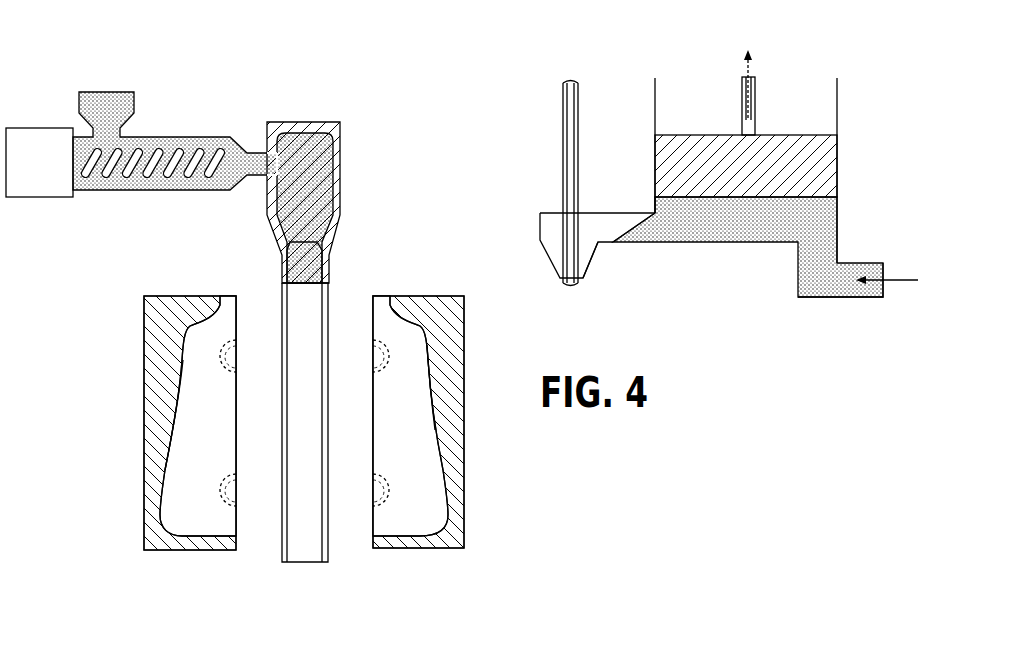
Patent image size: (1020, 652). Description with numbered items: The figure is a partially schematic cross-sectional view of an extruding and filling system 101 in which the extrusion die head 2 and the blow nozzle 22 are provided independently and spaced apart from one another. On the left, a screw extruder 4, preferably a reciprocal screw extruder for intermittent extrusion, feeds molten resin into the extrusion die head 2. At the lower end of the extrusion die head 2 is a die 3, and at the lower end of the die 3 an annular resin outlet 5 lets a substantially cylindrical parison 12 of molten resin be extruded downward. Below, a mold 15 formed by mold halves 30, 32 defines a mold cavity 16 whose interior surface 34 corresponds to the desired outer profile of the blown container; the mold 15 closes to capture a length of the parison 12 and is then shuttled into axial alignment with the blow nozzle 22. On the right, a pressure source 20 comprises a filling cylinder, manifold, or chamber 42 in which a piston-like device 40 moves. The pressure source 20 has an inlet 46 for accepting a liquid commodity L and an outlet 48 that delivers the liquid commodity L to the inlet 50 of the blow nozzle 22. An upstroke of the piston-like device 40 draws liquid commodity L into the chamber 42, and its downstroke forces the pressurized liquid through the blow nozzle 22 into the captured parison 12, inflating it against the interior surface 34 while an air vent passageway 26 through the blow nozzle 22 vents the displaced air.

The extruding and filling system 101 is at (92, 68).
The screw extruder 4 is at (208, 137).
The extrusion die head 2 is at (280, 118).
The die 3 is at (280, 256).
The annular resin outlet 5 is at (283, 292).
The parison 12 is at (306, 563).
The mold 15 is at (166, 391).
The mold half 30 is at (144, 375).
The interior surface 34 is at (165, 457).
The mold half 32 is at (466, 375).
The mold cavity 16 is at (425, 368).
The air vent passageway 26 is at (566, 128).
The filling cylinder, manifold, or chamber 42 is at (668, 110).
The pressure source 20 is at (838, 110).
The piston-like device 40 is at (820, 162).
The liquid commodity L is at (820, 222).
The outlet 48 is at (651, 210).
The inlet 50 is at (603, 232).
The blow nozzle 22 is at (548, 258).
The inlet 46 is at (867, 290).